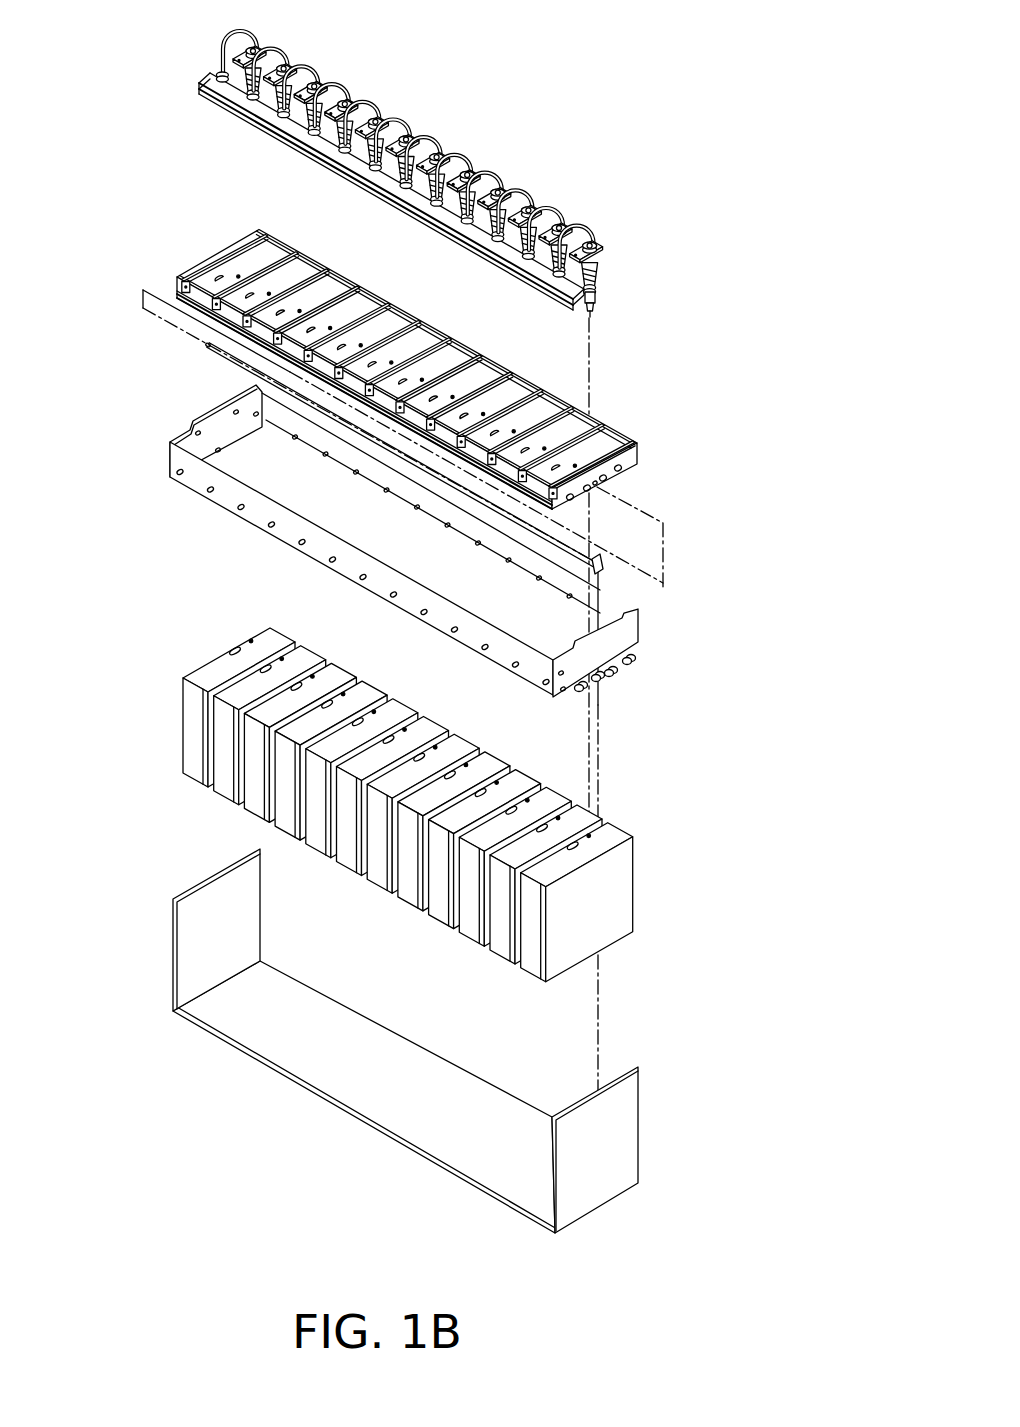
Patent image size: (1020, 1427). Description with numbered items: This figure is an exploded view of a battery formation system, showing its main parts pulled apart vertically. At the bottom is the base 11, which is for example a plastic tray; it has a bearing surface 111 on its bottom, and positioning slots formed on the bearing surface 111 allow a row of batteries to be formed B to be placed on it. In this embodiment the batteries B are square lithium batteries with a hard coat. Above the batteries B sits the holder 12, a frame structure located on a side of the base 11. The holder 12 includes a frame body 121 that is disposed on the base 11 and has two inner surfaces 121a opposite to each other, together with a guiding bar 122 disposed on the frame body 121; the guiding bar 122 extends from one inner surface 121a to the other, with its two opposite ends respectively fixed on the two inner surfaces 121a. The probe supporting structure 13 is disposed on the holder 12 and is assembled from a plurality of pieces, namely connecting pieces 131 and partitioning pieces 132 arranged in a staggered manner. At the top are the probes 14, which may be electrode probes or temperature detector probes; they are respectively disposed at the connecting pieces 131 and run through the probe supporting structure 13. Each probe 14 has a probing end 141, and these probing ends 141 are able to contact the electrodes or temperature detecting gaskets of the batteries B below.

The base 11 is at (474, 1041).
The bearing surface 111 is at (393, 1097).
The holder 12 is at (439, 522).
The frame body 121 is at (417, 544).
The inner surface 121a is at (218, 430).
The guiding bar 122 is at (600, 566).
The probe supporting structure 13 is at (477, 327).
The connecting piece 131 is at (271, 214).
The partitioning piece 132 is at (287, 221).
The probe 14 is at (567, 228).
The probing end 141 is at (597, 308).
The battery to be formed B is at (203, 768).